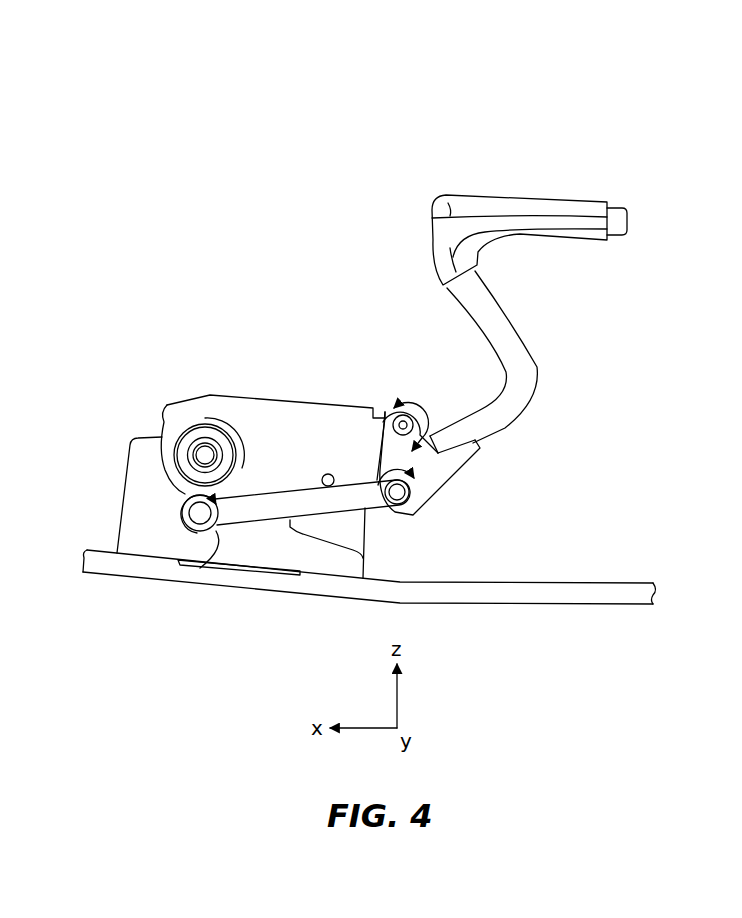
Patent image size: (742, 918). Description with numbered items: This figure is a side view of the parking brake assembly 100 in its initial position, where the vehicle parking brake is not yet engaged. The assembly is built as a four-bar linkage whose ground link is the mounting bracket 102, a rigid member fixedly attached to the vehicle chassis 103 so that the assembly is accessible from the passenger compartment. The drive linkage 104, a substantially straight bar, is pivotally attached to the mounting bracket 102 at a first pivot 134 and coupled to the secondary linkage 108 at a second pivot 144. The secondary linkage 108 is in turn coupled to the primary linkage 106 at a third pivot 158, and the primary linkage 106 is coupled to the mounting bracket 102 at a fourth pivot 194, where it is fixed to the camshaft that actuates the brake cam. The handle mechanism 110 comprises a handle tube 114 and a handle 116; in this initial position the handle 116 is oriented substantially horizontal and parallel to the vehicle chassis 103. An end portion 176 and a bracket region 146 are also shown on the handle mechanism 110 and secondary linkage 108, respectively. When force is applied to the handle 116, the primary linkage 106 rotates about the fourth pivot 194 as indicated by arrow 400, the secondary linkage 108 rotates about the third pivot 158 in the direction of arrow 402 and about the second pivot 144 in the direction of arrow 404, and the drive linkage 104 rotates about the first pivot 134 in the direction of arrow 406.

The parking brake assembly 100 is at (189, 204).
The mounting bracket 102 is at (147, 553).
The vehicle chassis 103 is at (270, 587).
The drive linkage 104 is at (300, 507).
The primary linkage 106 is at (306, 400).
The secondary linkage 108 is at (438, 478).
The handle mechanism 110 is at (522, 289).
The handle tube 114 is at (505, 310).
The handle 116 is at (548, 198).
The first pivot 134 is at (171, 516).
The second pivot 144 is at (405, 506).
The bracket 146 is at (472, 450).
The third pivot 158 is at (398, 411).
The end cap 176 is at (628, 222).
The fourth pivot 194 is at (168, 456).
The arrow 400 is at (172, 438).
The arrow 402 is at (428, 408).
The arrow 404 is at (383, 511).
The arrow 406 is at (210, 562).